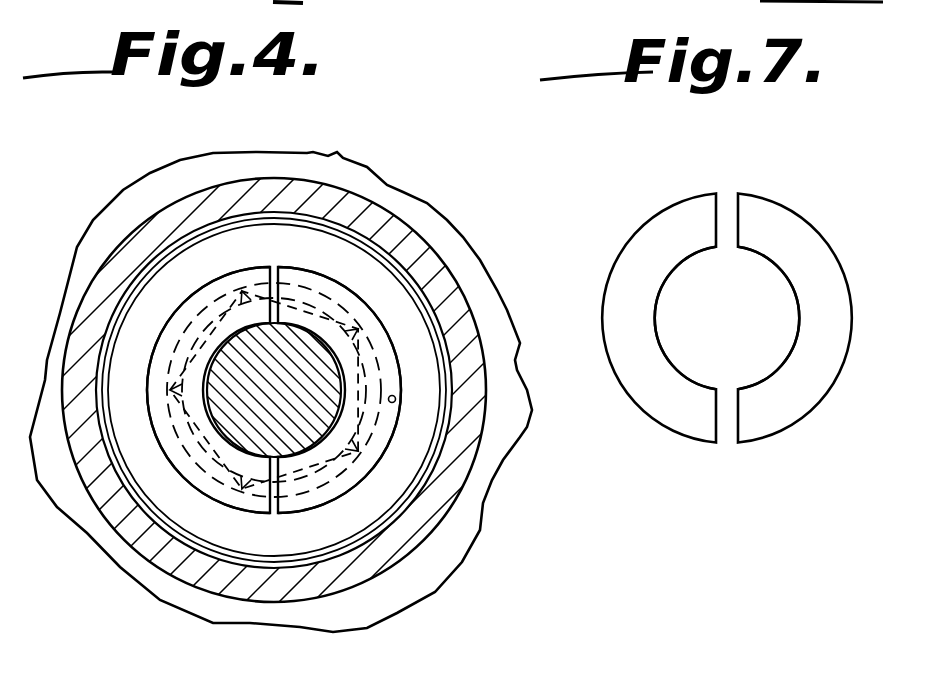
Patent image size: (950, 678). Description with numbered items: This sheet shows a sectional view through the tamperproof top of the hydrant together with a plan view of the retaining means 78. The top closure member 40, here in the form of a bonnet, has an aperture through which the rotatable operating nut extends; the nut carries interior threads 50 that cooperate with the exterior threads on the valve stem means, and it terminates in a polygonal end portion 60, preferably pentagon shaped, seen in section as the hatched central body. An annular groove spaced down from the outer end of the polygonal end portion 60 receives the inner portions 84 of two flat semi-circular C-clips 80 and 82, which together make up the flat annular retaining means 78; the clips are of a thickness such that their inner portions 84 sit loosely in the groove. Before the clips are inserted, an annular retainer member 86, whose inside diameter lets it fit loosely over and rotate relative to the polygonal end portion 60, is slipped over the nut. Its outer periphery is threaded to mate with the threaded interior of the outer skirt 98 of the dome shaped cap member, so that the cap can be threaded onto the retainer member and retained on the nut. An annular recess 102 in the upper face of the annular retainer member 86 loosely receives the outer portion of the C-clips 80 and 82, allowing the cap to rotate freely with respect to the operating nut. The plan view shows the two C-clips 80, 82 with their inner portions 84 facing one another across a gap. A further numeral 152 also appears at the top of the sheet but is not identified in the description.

In FIG. 4, the top closure member 40 is at (500, 363).
In FIG. 4, the outer skirt 98 is at (440, 220).
In FIG. 4, the annular retainer member 86 is at (433, 364).
In FIG. 4, the flat annular retaining means 78 is at (363, 468).
In FIG. 7, the flat annular retaining means 78 is at (722, 299).
In FIG. 4, the semi-circular C-clip 82 is at (212, 282).
In FIG. 7, the semi-circular C-clip 82 is at (615, 253).
In FIG. 4, the semi-circular C-clip 80 is at (302, 270).
In FIG. 7, the semi-circular C-clip 80 is at (837, 257).
In FIG. 4, the polygonal end portion 60 is at (352, 278).
In FIG. 4, the annular recess 102 is at (395, 403).
In FIG. 7, the inner portions 84 is at (658, 307).
In FIG. 7, the interior threads 50 is at (494, 2).
In FIG. 7, the arm 152 is at (616, 14).